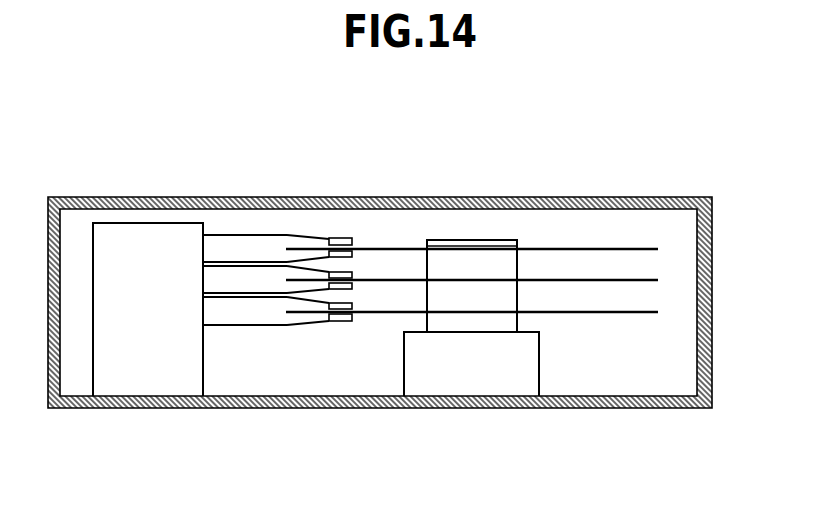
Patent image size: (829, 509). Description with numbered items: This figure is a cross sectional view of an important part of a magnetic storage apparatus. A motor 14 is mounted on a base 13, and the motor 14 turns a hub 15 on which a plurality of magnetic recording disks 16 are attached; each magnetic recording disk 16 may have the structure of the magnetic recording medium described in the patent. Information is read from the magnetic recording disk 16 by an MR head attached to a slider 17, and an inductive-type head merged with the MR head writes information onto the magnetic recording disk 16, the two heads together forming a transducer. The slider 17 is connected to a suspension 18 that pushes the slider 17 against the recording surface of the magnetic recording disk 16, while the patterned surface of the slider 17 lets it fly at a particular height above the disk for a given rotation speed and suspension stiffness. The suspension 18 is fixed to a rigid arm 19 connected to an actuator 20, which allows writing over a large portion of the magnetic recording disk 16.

The base 13 is at (660, 404).
The motor 14 is at (490, 385).
The hub 15 is at (480, 238).
The magnetic recording disks 16 is at (593, 244).
The slider 17 is at (348, 234).
The suspension 18 is at (317, 232).
The rigid arm 19 is at (253, 230).
The actuator 20 is at (153, 386).